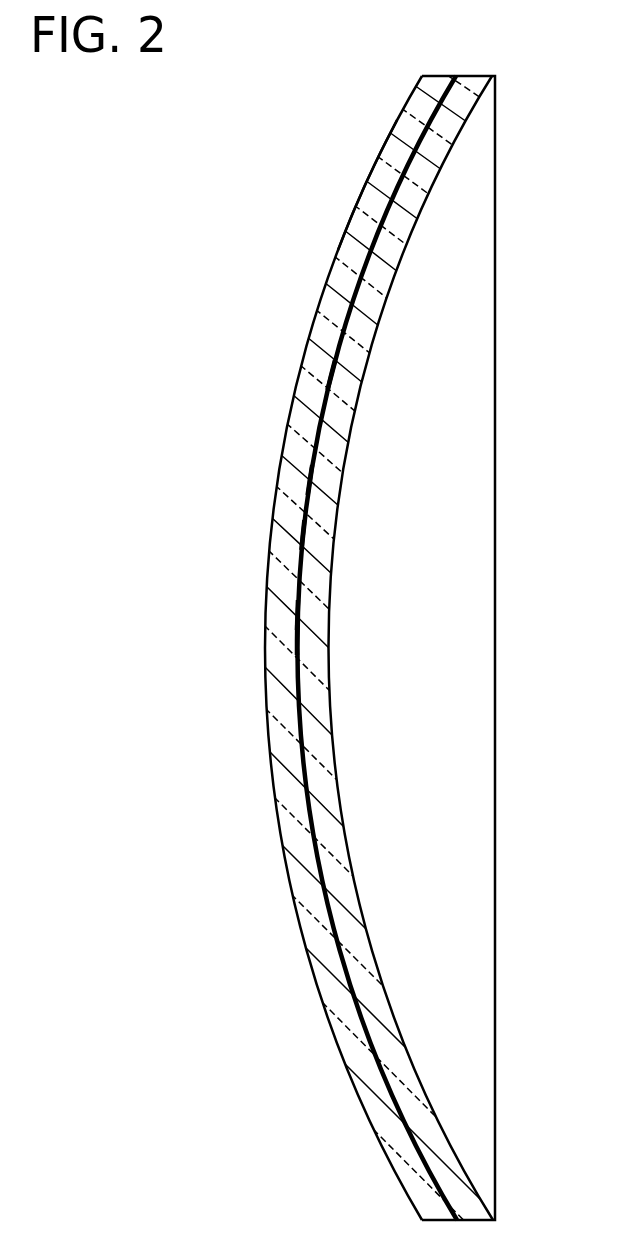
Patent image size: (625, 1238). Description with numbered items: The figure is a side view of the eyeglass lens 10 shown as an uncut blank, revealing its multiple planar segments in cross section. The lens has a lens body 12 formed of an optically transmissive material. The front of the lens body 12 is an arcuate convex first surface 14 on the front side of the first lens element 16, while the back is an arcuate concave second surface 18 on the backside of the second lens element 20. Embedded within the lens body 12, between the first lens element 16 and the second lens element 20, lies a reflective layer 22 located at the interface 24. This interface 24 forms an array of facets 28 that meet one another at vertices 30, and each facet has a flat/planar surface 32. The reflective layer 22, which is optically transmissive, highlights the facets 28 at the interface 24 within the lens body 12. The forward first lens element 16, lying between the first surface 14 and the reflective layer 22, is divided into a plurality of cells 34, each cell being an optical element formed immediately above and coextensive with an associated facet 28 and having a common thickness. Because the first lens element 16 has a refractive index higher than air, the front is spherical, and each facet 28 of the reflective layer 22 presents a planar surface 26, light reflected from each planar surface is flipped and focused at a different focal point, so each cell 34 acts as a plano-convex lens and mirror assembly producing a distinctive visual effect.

The eyeglass lens 10 is at (250, 203).
The lens body 12 is at (480, 74).
The first surface 14 is at (300, 373).
The first lens element 16 is at (297, 457).
The second surface 18 is at (453, 153).
The second lens element 20 is at (413, 203).
The reflective layer 22 is at (360, 293).
The interface 24 is at (297, 616).
The planar surface 26 is at (333, 375).
The facets 28 is at (300, 633).
The vertices 30 is at (310, 480).
The flat/planar surface 32 is at (303, 534).
The cells 34 is at (337, 248).